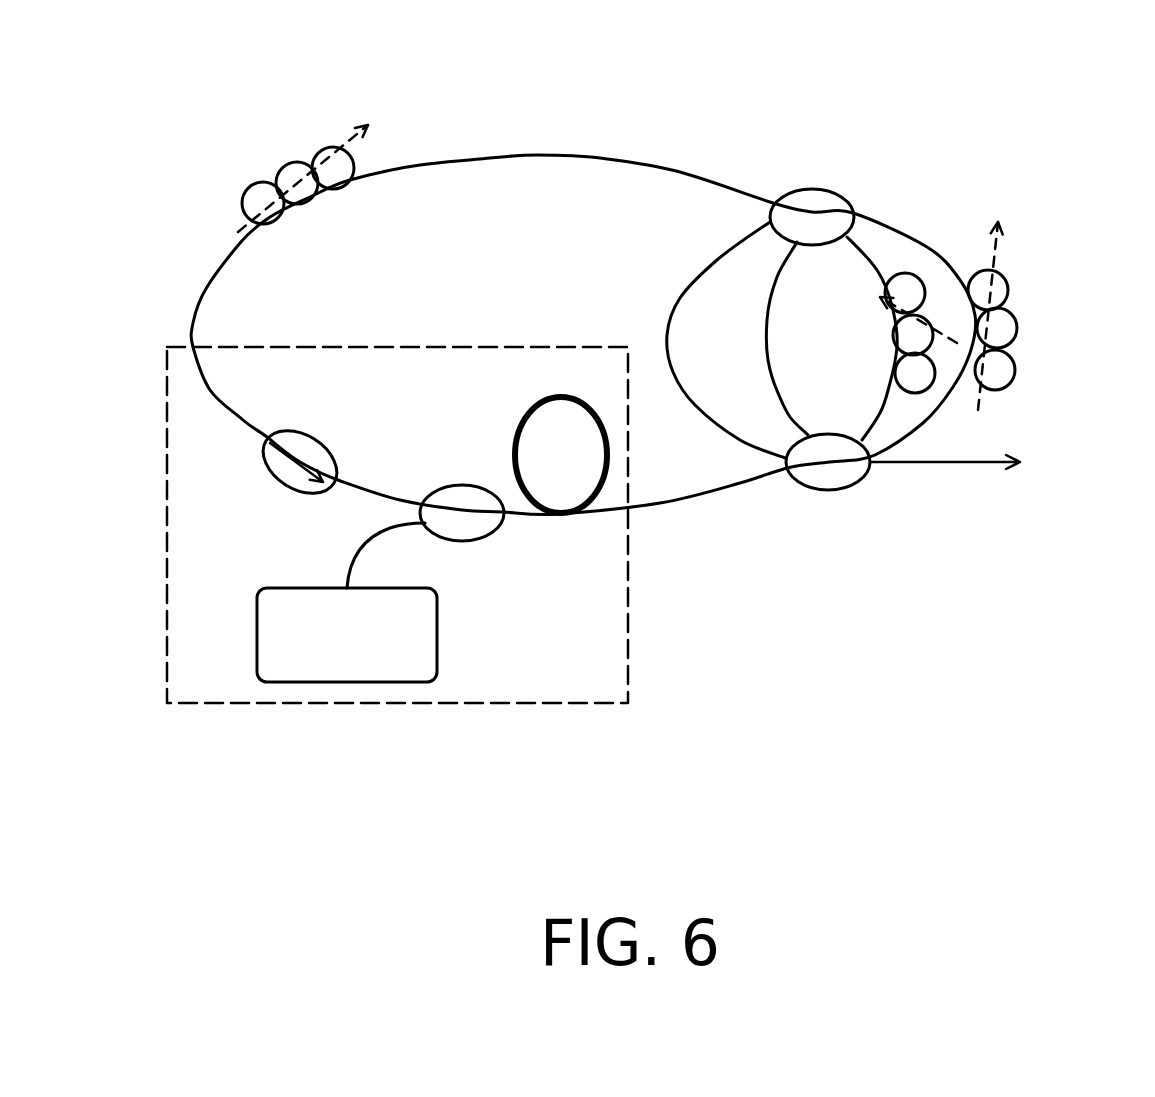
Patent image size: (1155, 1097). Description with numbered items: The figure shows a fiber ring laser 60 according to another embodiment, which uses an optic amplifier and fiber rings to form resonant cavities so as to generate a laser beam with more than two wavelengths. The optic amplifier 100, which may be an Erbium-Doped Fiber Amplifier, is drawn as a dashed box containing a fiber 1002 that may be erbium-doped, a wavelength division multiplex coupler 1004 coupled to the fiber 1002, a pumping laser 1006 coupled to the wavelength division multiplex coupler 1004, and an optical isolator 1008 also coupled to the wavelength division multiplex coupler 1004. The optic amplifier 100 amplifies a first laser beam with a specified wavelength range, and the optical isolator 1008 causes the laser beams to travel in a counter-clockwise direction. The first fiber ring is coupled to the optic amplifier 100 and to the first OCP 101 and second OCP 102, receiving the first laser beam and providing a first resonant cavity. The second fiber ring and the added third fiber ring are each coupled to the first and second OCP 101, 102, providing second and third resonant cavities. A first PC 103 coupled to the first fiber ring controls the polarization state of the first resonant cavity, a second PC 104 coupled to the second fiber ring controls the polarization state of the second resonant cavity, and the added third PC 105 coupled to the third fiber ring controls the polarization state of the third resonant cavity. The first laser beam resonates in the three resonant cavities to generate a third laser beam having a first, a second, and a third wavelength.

The fiber ring laser 60 is at (1154, 752).
The optic amplifier 100 is at (380, 705).
The first OCP 101 is at (828, 490).
The second OCP 102 is at (810, 187).
The first PC 103 is at (260, 180).
The second PC 104 is at (1018, 328).
The third PC 105 is at (910, 397).
The fiber 1002 is at (518, 425).
The wavelength division multiplex coupler 1004 is at (462, 541).
The pumping laser 1006 is at (437, 622).
The optical isolator 1008 is at (282, 487).